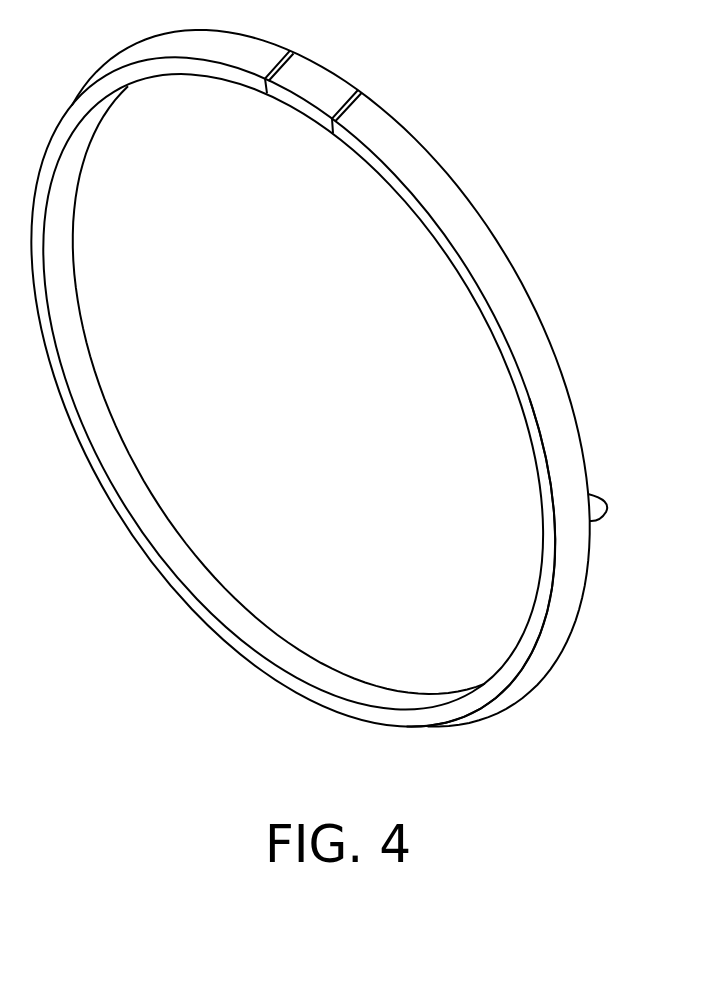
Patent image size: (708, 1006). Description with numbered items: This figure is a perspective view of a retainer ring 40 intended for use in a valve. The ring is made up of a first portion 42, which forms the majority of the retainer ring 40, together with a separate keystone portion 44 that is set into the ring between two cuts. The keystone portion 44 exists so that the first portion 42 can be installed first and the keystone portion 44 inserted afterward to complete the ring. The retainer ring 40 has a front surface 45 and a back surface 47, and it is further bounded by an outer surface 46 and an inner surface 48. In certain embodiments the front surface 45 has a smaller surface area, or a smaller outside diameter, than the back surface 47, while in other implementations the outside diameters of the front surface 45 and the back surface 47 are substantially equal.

The retainer ring 40 is at (531, 175).
The first portion 42 is at (523, 323).
The keystone portion 44 is at (317, 87).
The front surface 45 is at (517, 378).
The outer surface 46 is at (555, 622).
The back surface 47 is at (604, 513).
The inner surface 48 is at (110, 442).